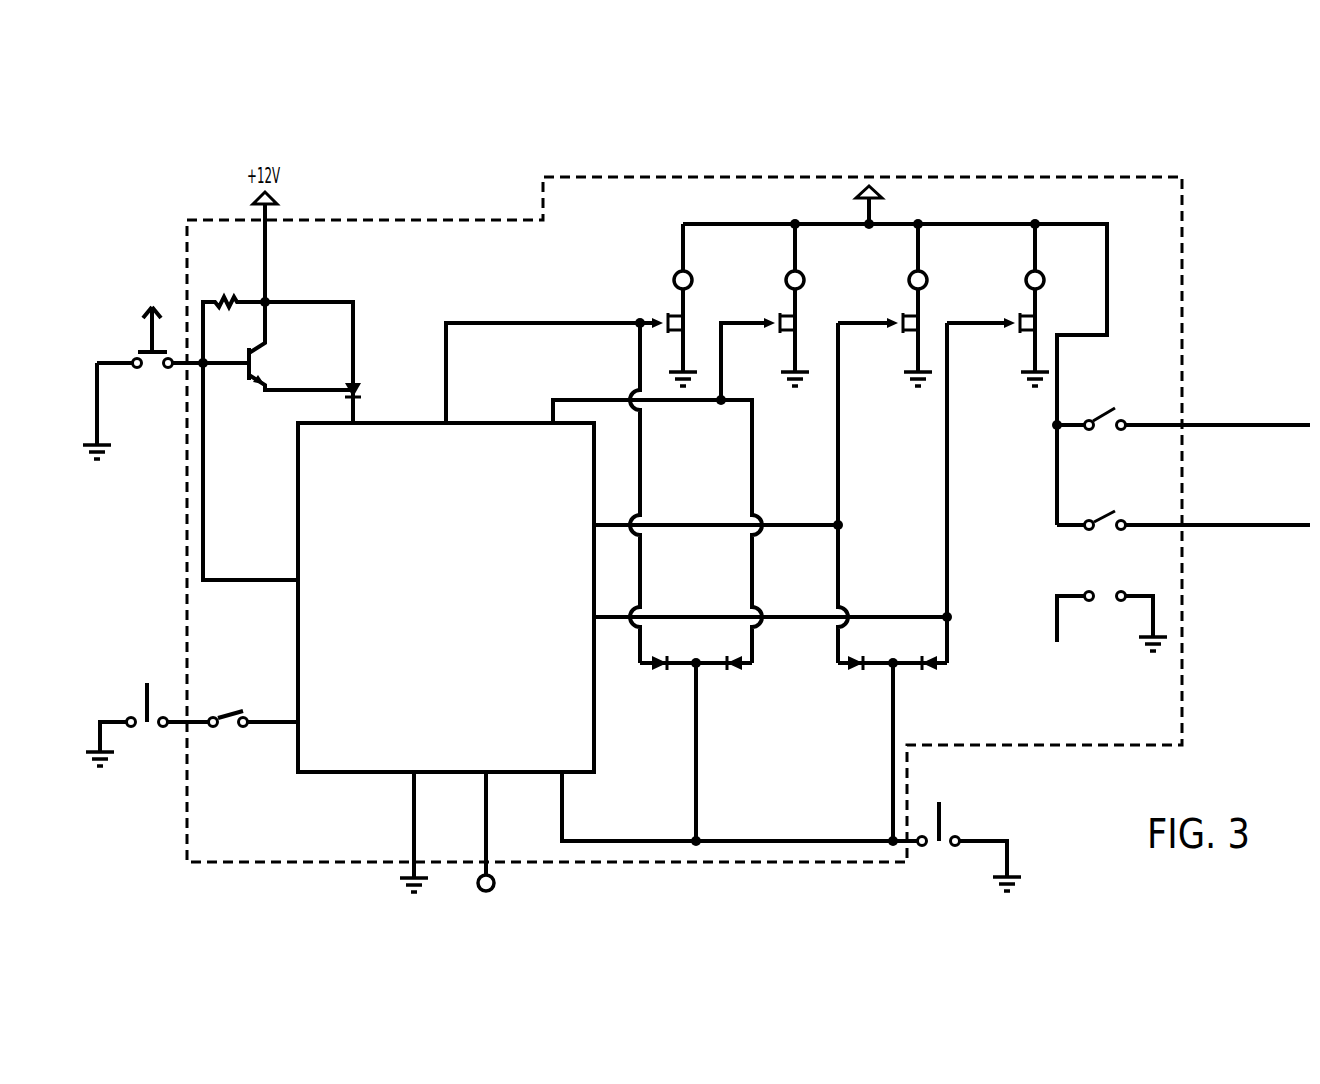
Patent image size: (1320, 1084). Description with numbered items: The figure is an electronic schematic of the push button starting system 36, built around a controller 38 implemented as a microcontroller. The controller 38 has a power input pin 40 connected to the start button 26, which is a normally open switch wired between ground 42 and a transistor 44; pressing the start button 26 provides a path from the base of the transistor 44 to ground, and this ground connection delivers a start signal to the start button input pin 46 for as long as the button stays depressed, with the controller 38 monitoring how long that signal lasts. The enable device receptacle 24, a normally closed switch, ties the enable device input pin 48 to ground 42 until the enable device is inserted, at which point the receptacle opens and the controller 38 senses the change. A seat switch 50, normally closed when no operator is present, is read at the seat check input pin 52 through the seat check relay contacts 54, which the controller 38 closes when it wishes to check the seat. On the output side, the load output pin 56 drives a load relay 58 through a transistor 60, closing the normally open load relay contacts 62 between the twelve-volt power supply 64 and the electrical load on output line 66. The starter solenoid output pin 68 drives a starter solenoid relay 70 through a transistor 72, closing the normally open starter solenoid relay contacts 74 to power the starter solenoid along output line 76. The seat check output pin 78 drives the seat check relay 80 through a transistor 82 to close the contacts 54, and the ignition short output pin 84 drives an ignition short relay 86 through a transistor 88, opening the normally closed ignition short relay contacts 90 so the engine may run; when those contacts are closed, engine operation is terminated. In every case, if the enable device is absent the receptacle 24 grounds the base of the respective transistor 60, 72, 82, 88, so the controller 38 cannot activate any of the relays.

The enable device receptacle 24 is at (945, 838).
The start button 26 is at (152, 332).
The starting system 36 is at (365, 220).
The controller 38 is at (410, 423).
The power input pin 40 is at (353, 410).
The ground 42 is at (97, 405).
The transistor 44 is at (264, 364).
The start button input pin 46 is at (262, 580).
The enable device input pin 48 is at (563, 805).
The seat switch 50 is at (139, 728).
The seat check input pin 52 is at (282, 723).
The seat check relay contacts 54 is at (227, 718).
The load output pin 56 is at (553, 410).
The load relay 58 is at (788, 272).
The transistor 60 is at (800, 327).
The load relay contacts 62 is at (1115, 408).
The 12-volt power supply 64 is at (878, 192).
The output line 66 is at (1207, 427).
The starter solenoid output pin 68 is at (624, 524).
The starter solenoid relay 70 is at (908, 280).
The transistor 72 is at (920, 326).
The starter solenoid relay contacts 74 is at (1085, 529).
The output line 76 is at (1207, 523).
The seat check output pin 78 is at (447, 362).
The seat check relay 80 is at (674, 280).
The transistor 82 is at (687, 327).
The ignition short output pin 84 is at (622, 617).
The ignition short relay 86 is at (1027, 275).
The transistor 88 is at (1045, 325).
The ignition short relay contacts 90 is at (1105, 600).